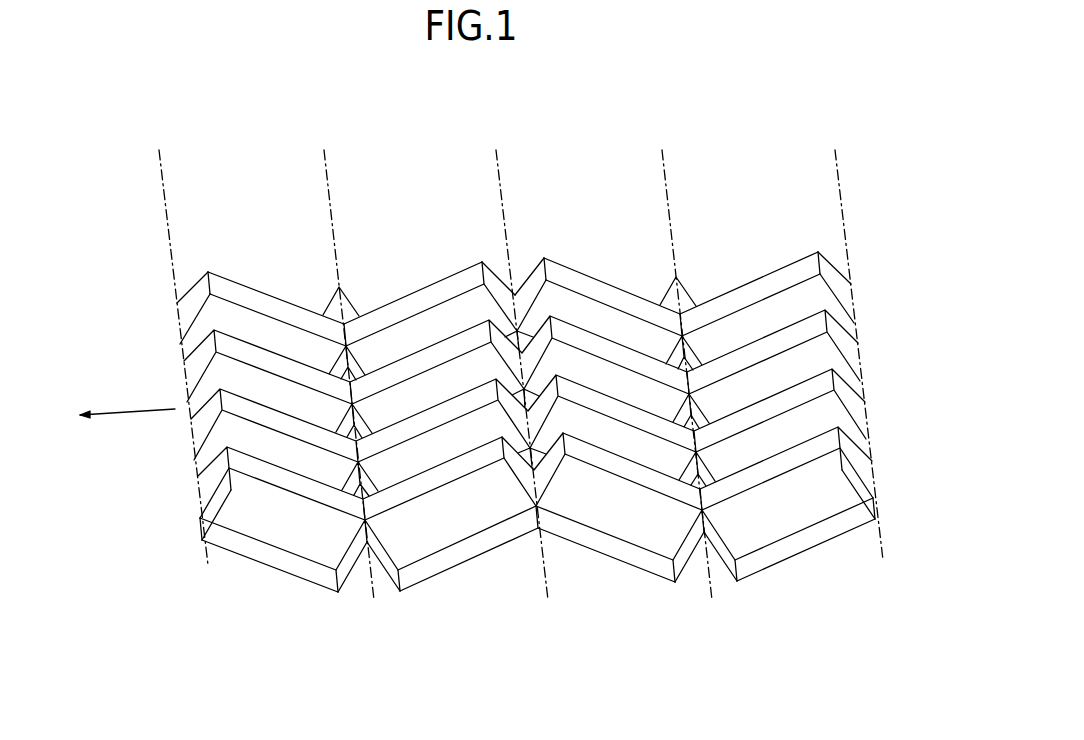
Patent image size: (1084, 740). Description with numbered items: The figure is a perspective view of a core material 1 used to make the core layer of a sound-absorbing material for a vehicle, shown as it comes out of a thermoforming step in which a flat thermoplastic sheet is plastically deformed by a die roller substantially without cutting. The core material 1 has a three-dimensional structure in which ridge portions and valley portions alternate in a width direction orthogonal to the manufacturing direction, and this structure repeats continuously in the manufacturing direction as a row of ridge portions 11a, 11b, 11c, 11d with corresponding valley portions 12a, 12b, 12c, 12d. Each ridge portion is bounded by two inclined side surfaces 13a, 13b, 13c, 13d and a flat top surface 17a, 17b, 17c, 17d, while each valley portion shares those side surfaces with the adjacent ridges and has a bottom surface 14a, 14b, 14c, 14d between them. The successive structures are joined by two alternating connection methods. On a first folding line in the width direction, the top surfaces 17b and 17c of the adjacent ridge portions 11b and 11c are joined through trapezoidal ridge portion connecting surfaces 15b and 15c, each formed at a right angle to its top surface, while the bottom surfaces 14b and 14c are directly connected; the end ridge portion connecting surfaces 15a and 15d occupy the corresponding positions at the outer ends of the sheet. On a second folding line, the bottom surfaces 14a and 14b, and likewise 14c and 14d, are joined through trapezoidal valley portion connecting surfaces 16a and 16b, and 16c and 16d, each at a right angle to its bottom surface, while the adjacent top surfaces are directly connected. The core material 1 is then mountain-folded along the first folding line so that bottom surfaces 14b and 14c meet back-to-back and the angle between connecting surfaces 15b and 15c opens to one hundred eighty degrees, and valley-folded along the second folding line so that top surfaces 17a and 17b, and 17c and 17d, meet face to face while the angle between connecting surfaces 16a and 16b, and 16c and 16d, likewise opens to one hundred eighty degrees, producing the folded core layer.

The core material 1 is at (716, 176).
The ridge portion 11a is at (185, 312).
The ridge portion 11b is at (443, 523).
The ridge portion 11c is at (645, 523).
The ridge portion 11d is at (853, 288).
The valley portion 12a is at (203, 333).
The valley portion 12b is at (390, 355).
The valley portion 12c is at (582, 313).
The valley portion 12d is at (775, 325).
The side surface 13a is at (238, 517).
The side surface 13b is at (490, 508).
The side surface 13c is at (592, 510).
The side surface 13d is at (822, 510).
The bottom surface 14a is at (288, 558).
The bottom surface 14b is at (446, 566).
The bottom surface 14c is at (652, 568).
The bottom surface 14d is at (780, 548).
The ridge portion connecting surface 15a is at (205, 490).
The ridge portion connecting surface 15b is at (498, 278).
The ridge portion connecting surface 15c is at (528, 276).
The ridge portion connecting surface 15d is at (880, 470).
The valley portion connecting surface 16a is at (341, 592).
The valley portion connecting surface 16b is at (398, 594).
The valley portion connecting surface 16c is at (689, 598).
The valley portion connecting surface 16d is at (727, 595).
The top surface 17a is at (263, 300).
The top surface 17b is at (403, 290).
The top surface 17c is at (610, 290).
The top surface 17d is at (738, 292).